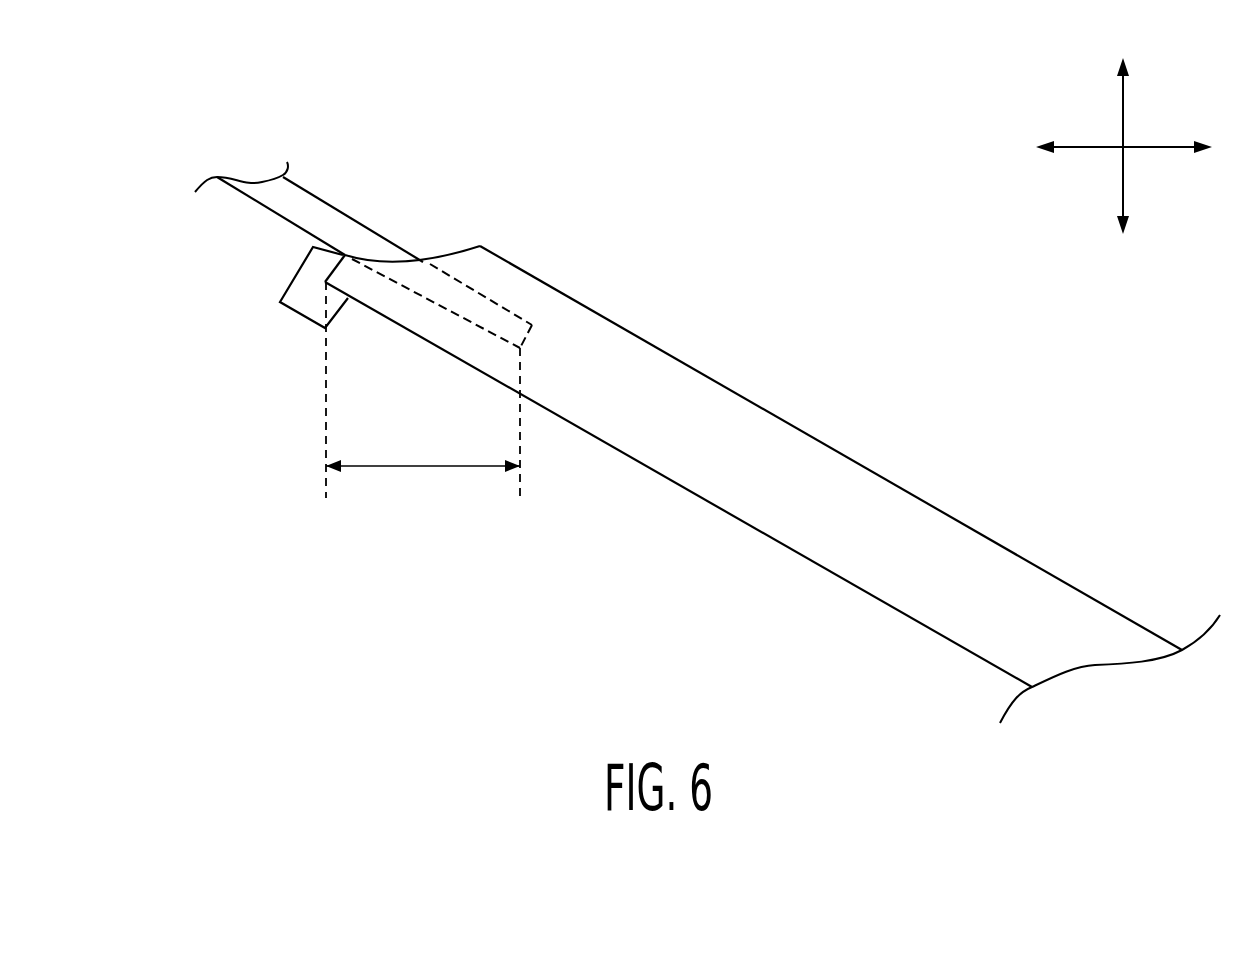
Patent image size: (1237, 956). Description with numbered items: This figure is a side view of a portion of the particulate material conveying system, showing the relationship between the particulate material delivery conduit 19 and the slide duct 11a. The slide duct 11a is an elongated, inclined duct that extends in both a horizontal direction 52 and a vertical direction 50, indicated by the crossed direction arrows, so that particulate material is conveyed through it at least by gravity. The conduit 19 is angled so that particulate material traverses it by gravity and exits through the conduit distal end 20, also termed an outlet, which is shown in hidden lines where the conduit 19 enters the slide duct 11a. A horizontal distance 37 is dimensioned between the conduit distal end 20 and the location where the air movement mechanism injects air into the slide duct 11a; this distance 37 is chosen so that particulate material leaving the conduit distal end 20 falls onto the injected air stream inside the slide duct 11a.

The slide duct 11a is at (713, 378).
The particulate material delivery conduit 19 is at (380, 237).
The conduit distal end 20 is at (535, 327).
The horizontal distance 37 is at (285, 292).
The vertical direction 50 is at (1123, 105).
The horizontal direction 52 is at (1155, 147).